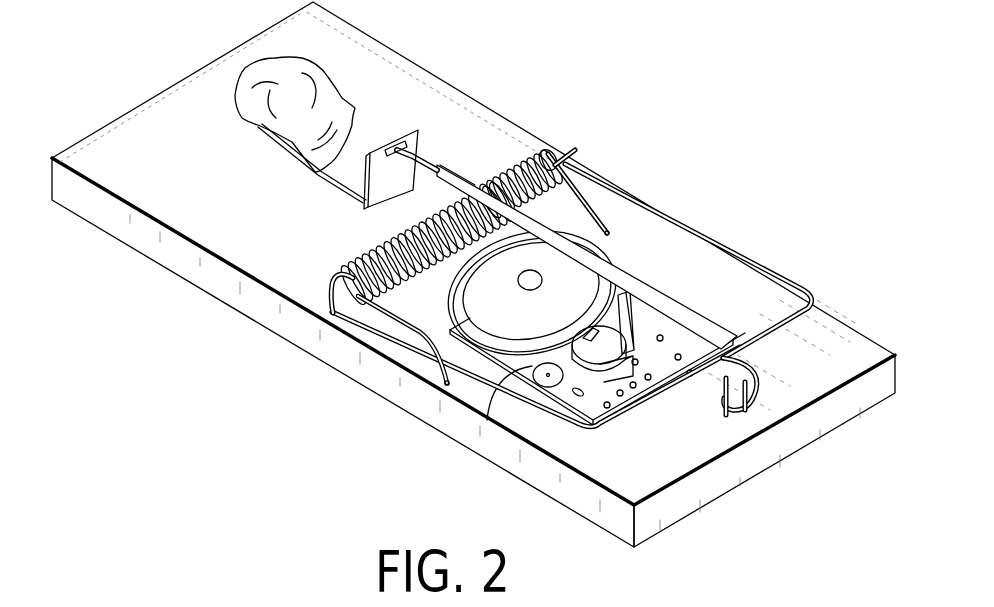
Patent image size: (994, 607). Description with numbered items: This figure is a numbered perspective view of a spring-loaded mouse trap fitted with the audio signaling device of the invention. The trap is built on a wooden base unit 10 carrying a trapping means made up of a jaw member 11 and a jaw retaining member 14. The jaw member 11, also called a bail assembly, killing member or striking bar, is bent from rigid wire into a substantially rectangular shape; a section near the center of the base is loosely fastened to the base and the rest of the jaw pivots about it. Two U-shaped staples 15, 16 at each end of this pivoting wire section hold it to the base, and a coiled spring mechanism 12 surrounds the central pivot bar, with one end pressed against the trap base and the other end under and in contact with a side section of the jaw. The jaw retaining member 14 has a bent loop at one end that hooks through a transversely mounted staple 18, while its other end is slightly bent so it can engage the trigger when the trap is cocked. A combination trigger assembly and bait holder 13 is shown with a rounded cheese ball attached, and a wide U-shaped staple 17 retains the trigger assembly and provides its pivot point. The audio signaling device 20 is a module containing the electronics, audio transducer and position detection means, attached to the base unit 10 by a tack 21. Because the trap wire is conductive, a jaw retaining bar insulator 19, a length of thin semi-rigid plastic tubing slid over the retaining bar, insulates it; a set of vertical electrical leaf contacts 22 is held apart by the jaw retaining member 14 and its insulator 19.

The wooden base unit 10 is at (172, 253).
The jaw member 11 is at (563, 427).
The coiled spring mechanism 12 is at (350, 263).
The combination trigger assembly and bait holder 13 is at (293, 160).
The jaw retaining member 14 is at (427, 157).
The U-shaped staple 15 is at (307, 280).
The U-shaped staple 16 is at (530, 160).
The wide U-shaped staple 17 is at (353, 210).
The transversely mounted staple 18 is at (738, 378).
The jaw retaining bar insulator 19 is at (465, 172).
The audio signaling device 20 is at (620, 260).
The tack 21 is at (513, 373).
The vertical electrical leaf contacts 22 is at (615, 302).